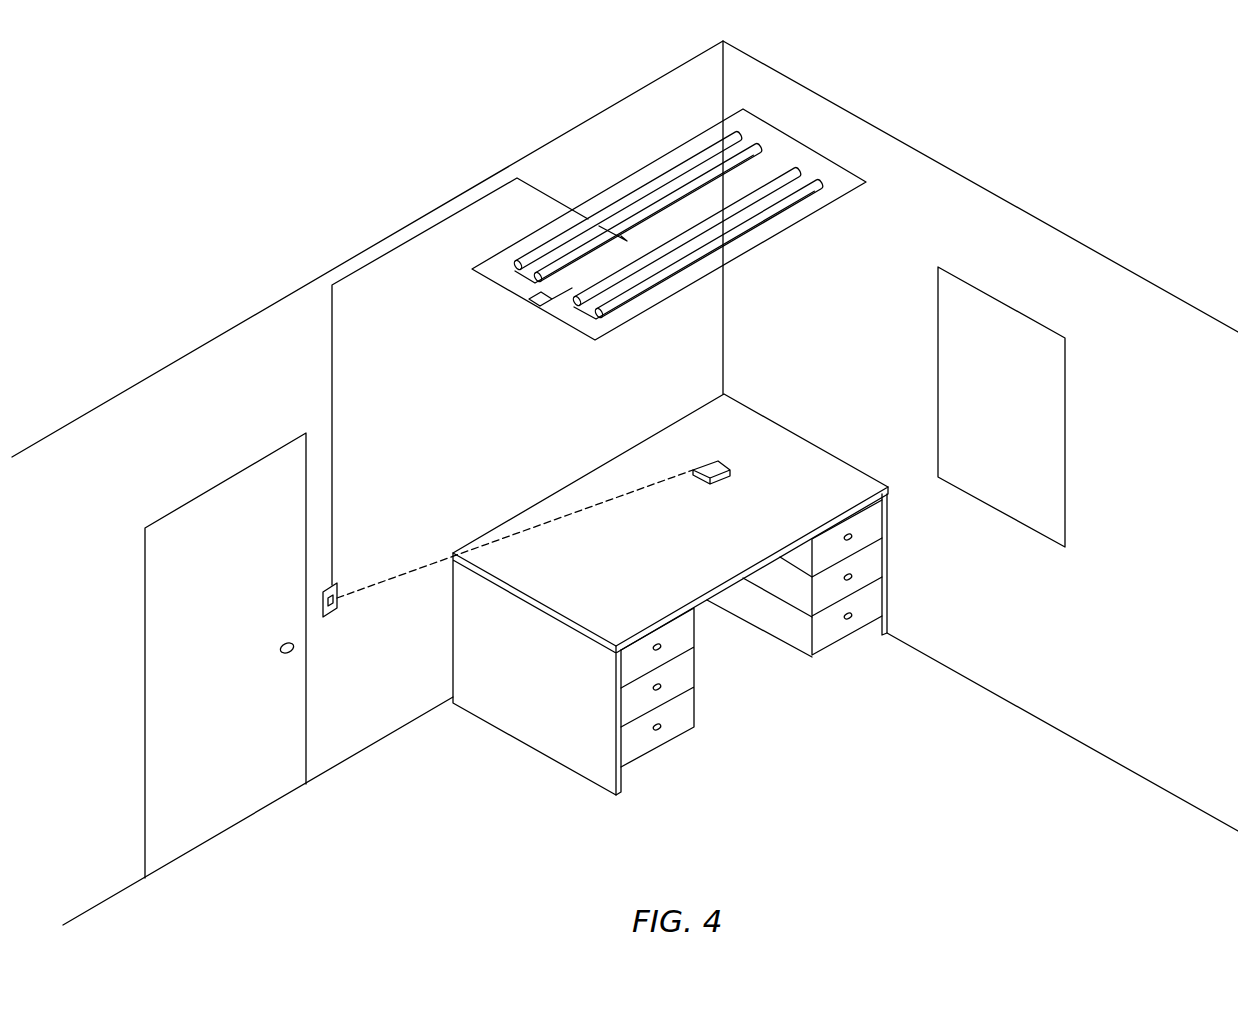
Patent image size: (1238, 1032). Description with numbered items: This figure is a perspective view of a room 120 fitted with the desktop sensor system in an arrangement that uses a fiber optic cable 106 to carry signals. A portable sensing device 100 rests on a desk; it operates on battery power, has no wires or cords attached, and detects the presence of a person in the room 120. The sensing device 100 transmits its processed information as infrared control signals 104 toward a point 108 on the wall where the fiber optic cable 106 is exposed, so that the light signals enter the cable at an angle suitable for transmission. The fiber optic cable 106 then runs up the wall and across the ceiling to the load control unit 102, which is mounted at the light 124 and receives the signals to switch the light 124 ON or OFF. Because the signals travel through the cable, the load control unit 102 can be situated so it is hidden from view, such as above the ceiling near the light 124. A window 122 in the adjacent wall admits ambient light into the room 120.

The portable sensing device 100 is at (710, 466).
The load control unit 102 is at (528, 302).
The control signals 104 is at (405, 573).
The fiber optic cable 106 is at (333, 416).
The exposed point of fiber optic cable 108 is at (333, 608).
The room 120 is at (1040, 212).
The window 122 is at (1065, 394).
The light 124 is at (624, 185).